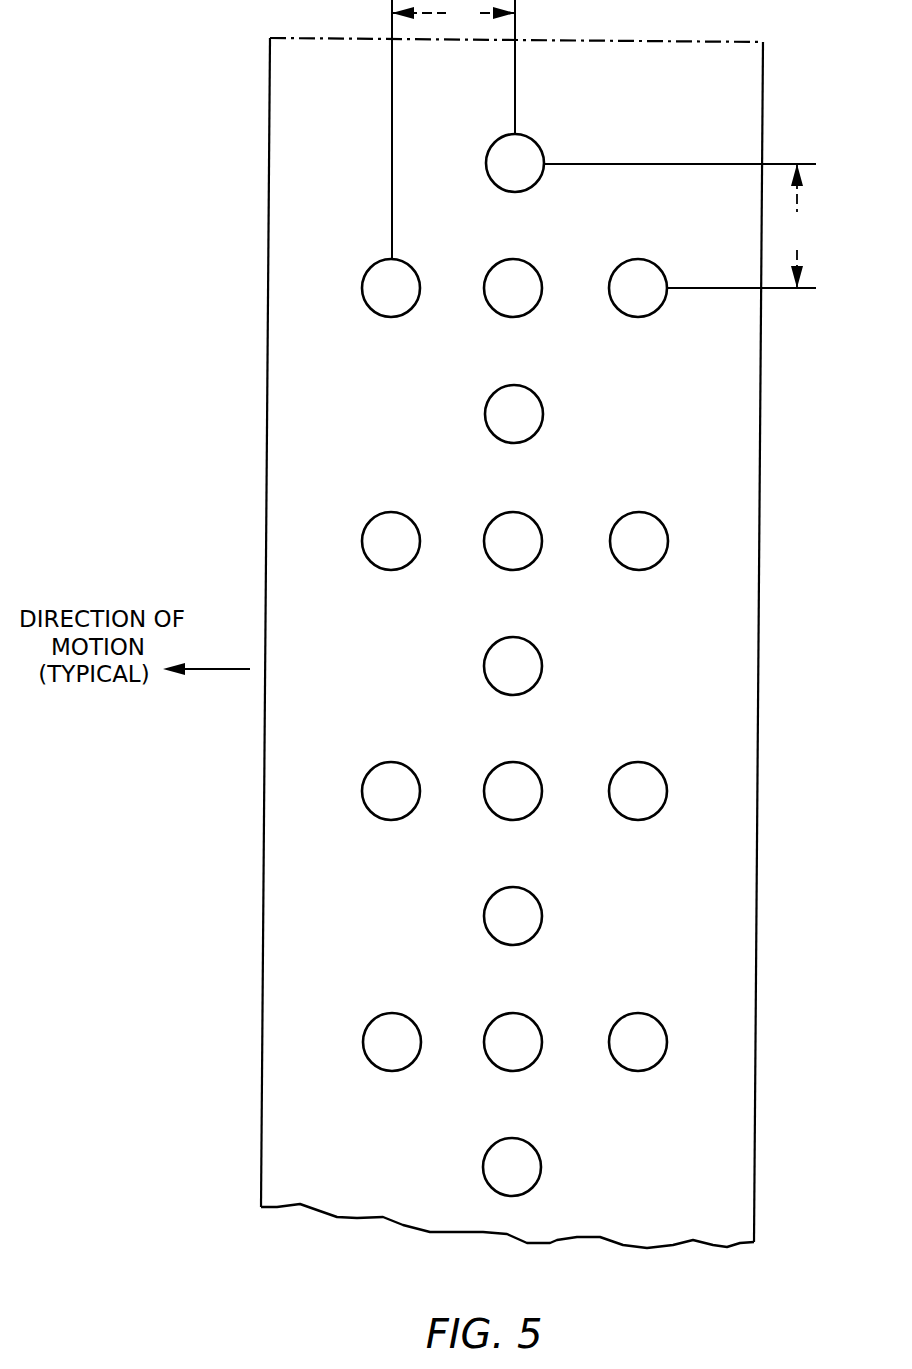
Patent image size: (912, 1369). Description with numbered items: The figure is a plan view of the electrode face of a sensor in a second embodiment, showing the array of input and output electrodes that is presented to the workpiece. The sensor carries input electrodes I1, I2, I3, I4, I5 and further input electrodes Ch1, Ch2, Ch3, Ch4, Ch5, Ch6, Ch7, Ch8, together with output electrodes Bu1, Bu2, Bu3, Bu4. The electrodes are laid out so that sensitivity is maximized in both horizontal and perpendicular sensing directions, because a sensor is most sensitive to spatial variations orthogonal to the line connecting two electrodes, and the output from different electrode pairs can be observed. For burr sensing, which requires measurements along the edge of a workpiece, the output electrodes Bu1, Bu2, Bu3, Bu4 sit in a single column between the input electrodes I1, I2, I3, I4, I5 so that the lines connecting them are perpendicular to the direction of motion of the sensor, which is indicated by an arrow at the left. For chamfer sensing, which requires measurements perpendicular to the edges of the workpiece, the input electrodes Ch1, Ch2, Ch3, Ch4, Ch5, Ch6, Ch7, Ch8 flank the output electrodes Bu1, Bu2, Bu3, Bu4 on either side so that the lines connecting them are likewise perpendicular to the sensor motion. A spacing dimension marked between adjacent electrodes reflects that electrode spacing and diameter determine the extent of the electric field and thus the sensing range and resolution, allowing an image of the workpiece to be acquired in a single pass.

The input electrode I1 is at (515, 163).
The input electrode I2 is at (514, 414).
The input electrode I3 is at (513, 666).
The input electrode I4 is at (513, 916).
The input electrode I5 is at (512, 1167).
The input electrode Ch1 is at (391, 288).
The input electrode Ch2 is at (638, 288).
The input electrode Ch3 is at (391, 541).
The input electrode Ch4 is at (639, 541).
The input electrode Ch5 is at (391, 791).
The input electrode Ch6 is at (638, 791).
The input electrode Ch7 is at (392, 1042).
The input electrode Ch8 is at (638, 1042).
The output electrode Bu1 is at (513, 288).
The output electrode Bu2 is at (513, 541).
The output electrode Bu3 is at (513, 791).
The output electrode Bu4 is at (513, 1042).